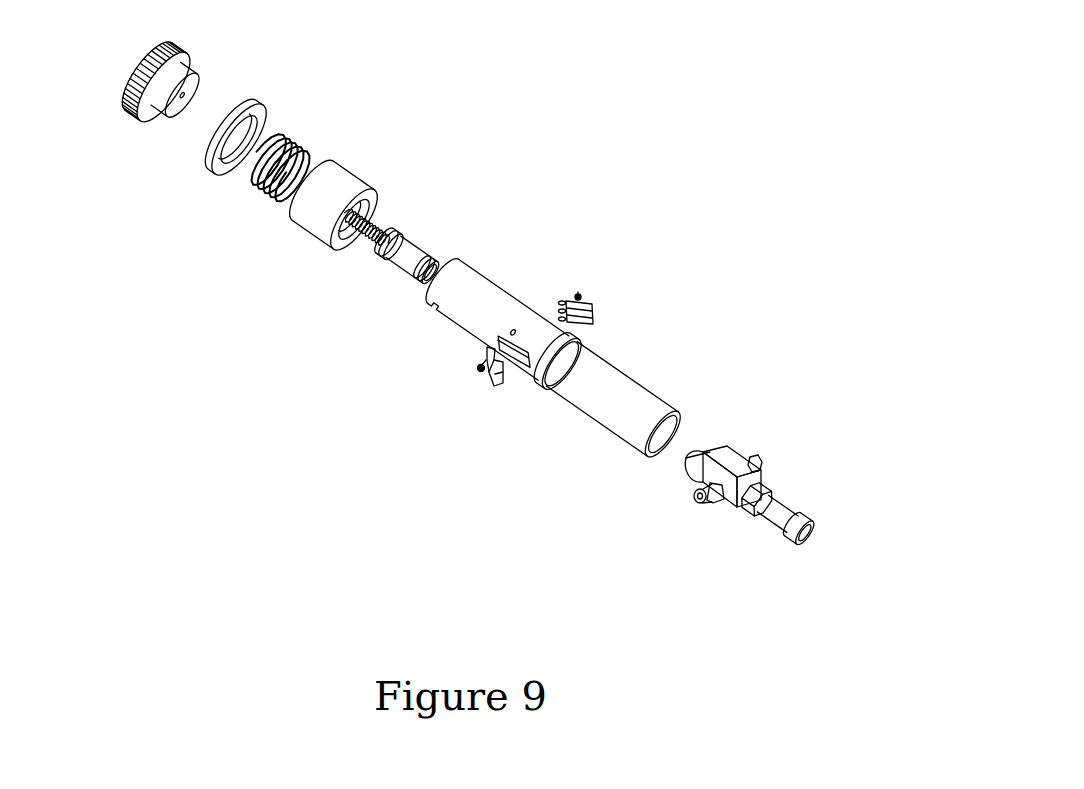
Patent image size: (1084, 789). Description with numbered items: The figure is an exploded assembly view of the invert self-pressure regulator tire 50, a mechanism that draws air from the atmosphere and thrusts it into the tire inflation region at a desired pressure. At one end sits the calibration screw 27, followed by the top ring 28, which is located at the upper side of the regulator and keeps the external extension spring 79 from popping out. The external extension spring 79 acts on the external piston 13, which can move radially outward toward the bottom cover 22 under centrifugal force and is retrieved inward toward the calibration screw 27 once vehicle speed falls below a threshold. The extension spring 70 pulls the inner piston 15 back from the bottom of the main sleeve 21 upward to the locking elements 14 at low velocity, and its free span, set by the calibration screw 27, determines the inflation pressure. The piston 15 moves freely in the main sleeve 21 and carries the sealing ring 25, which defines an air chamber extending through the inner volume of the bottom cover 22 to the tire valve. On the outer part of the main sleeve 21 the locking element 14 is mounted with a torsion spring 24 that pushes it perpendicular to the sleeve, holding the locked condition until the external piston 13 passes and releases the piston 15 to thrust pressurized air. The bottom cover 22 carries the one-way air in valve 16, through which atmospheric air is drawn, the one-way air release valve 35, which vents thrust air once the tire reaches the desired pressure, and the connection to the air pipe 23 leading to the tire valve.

The invert self-pressure regulator tire 50 is at (661, 56).
The calibration screw 27 is at (116, 80).
The top ring 28 is at (204, 140).
The external extension spring 79 is at (254, 186).
The external piston 13 is at (352, 178).
The extension spring 70 is at (348, 242).
The piston 15 is at (396, 270).
The sealing ring 25 is at (433, 262).
The main sleeve 21 is at (653, 400).
The torsion spring 24 is at (476, 370).
The locking element 14 is at (498, 386).
The bottom cover 22 is at (713, 447).
The one-way air in valve 16 is at (695, 497).
The one-way air release valve 35 is at (757, 462).
The air pipe 23 is at (772, 527).